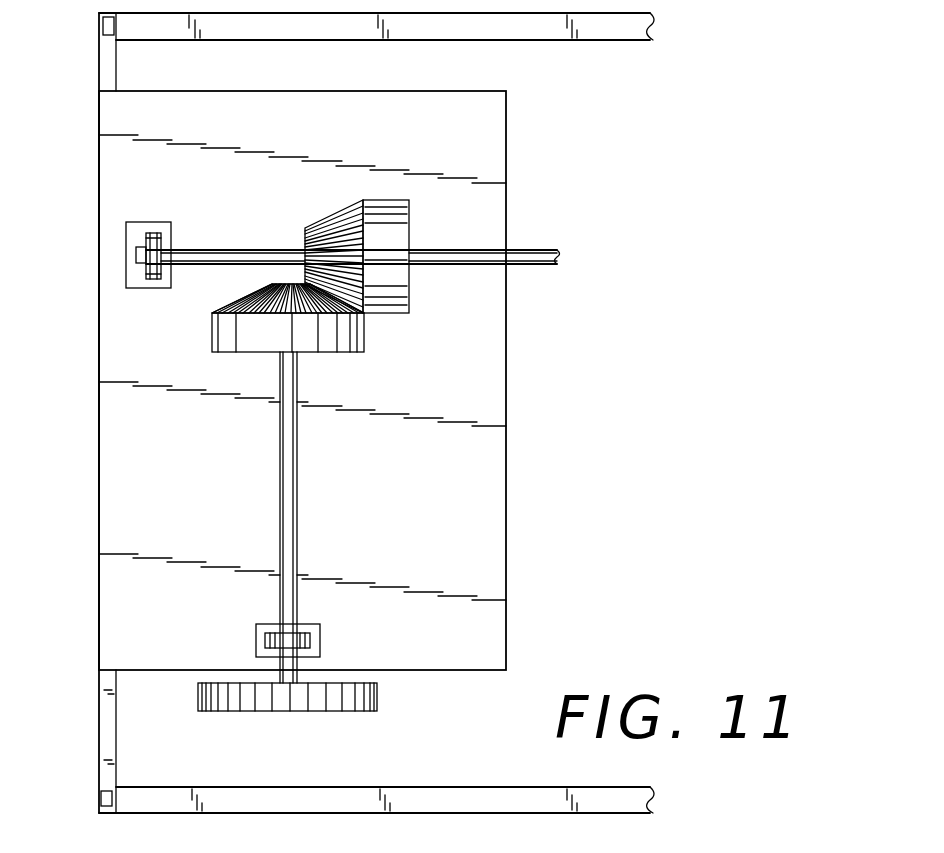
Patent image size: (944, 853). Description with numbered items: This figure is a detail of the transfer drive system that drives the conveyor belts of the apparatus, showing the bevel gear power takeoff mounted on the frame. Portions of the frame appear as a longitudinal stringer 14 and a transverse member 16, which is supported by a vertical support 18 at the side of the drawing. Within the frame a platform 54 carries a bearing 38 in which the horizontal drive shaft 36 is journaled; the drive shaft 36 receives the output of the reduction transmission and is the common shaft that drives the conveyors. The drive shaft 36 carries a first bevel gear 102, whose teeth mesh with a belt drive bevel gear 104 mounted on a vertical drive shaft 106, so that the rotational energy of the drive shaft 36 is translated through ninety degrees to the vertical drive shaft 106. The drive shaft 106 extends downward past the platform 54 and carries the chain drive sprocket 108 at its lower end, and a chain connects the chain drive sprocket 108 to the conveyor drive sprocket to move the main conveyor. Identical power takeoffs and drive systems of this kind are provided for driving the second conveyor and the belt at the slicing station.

The longitudinal stringers 14 is at (384, 787).
The transverse members 16 is at (99, 716).
The vertical supports 18 is at (99, 800).
The drive shaft 36 is at (535, 250).
The bearings 38 is at (156, 233).
The platforms 54 is at (448, 641).
The first bevel gear 102 is at (410, 228).
The belt drive bevel gear 104 is at (212, 336).
The drive shaft 106 is at (297, 528).
The chain drive sprocket 108 is at (340, 712).